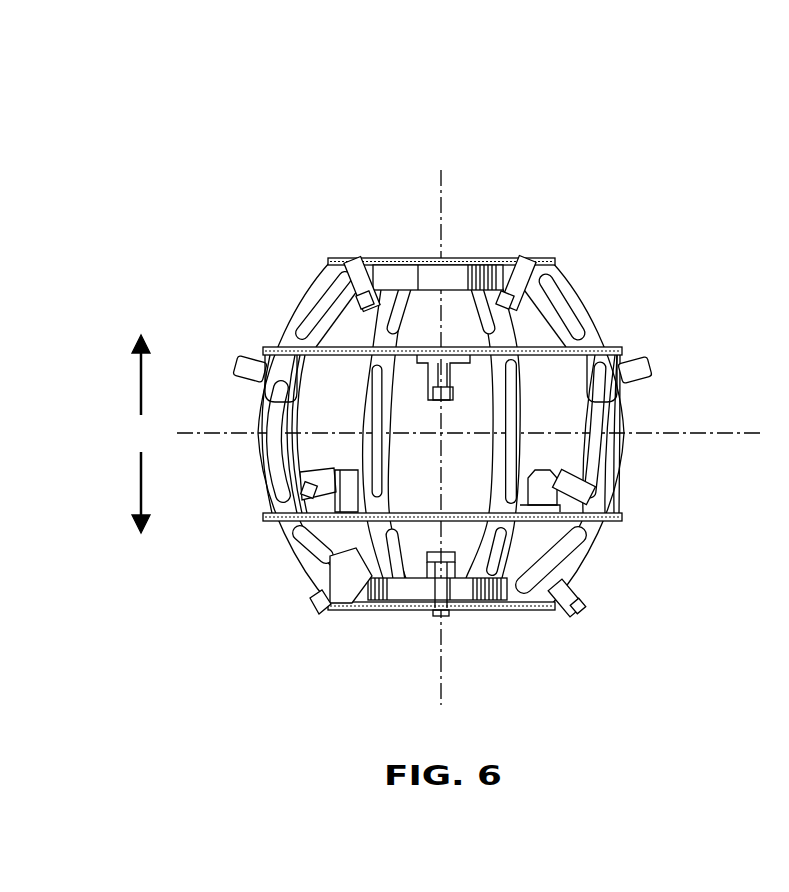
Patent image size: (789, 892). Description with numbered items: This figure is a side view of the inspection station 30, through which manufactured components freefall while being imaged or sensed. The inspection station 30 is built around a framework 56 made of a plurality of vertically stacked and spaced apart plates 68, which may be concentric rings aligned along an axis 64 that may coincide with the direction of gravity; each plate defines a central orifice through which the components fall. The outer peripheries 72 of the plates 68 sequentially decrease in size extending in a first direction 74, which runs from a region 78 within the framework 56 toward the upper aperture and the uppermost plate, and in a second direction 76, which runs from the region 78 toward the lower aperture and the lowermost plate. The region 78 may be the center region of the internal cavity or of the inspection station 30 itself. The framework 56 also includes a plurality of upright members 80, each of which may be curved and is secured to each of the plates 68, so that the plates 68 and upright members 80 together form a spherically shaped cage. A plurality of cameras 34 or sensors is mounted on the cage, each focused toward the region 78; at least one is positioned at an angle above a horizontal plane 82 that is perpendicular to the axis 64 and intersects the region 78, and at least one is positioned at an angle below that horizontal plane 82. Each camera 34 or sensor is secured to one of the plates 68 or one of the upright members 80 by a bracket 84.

The inspection station 30 is at (320, 140).
The cameras 34 is at (360, 307).
The framework 56 is at (612, 538).
The axis 64 is at (440, 202).
The vertically stacked and spaced apart plates 68 is at (541, 266).
The outer peripheries 72 is at (556, 261).
The first direction 74 is at (140, 382).
The second direction 76 is at (140, 485).
The region 78 is at (464, 461).
The upright members 80 is at (363, 373).
The horizontal plane 82 is at (708, 432).
The bracket 84 is at (389, 287).